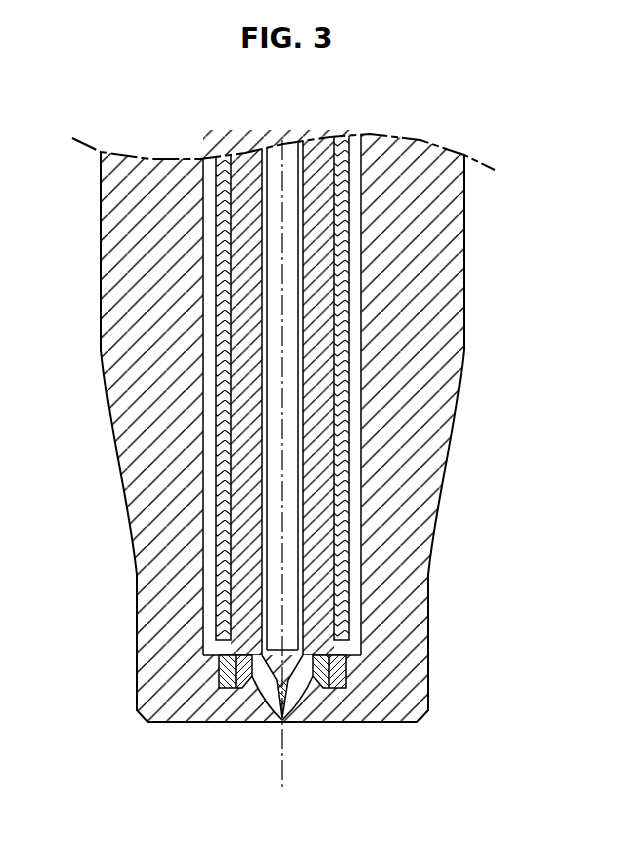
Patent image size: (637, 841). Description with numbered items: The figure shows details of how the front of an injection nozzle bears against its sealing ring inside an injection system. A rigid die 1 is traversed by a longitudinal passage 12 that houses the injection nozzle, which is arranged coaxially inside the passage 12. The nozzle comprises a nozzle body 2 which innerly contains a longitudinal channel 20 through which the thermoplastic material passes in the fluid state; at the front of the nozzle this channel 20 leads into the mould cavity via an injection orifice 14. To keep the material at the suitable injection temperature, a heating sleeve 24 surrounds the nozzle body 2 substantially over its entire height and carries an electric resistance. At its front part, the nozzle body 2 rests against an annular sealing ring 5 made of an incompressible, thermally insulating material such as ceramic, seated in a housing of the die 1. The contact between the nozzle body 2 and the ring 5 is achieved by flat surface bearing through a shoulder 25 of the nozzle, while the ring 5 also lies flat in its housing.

The die 1 is at (163, 478).
The nozzle body 2 is at (316, 423).
The sealing ring 5 is at (345, 676).
The longitudinal passage 12 is at (355, 298).
The injection orifice 14 is at (281, 724).
The longitudinal channel 20 is at (287, 205).
The heating sleeve 24 is at (223, 277).
The shoulder 25 is at (246, 678).